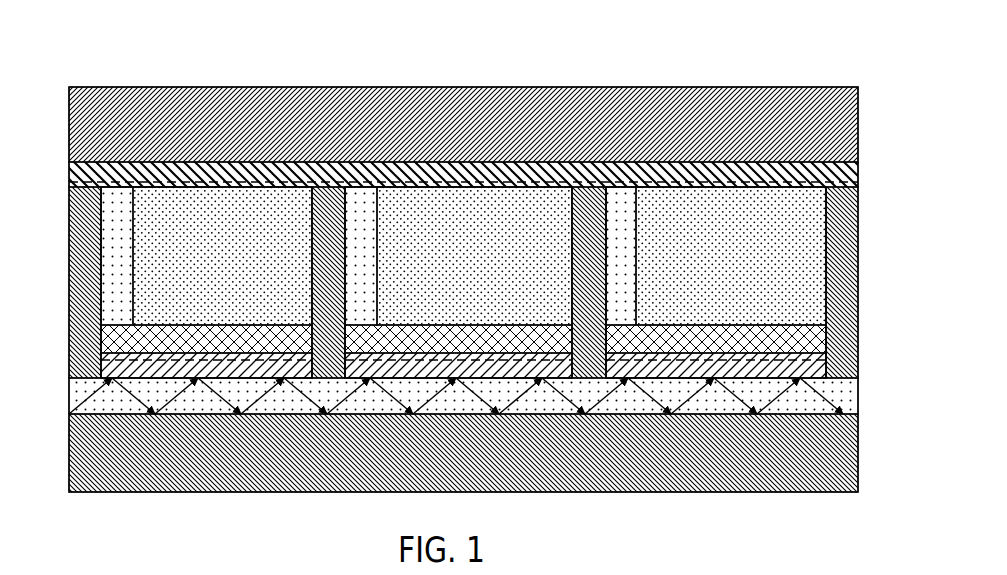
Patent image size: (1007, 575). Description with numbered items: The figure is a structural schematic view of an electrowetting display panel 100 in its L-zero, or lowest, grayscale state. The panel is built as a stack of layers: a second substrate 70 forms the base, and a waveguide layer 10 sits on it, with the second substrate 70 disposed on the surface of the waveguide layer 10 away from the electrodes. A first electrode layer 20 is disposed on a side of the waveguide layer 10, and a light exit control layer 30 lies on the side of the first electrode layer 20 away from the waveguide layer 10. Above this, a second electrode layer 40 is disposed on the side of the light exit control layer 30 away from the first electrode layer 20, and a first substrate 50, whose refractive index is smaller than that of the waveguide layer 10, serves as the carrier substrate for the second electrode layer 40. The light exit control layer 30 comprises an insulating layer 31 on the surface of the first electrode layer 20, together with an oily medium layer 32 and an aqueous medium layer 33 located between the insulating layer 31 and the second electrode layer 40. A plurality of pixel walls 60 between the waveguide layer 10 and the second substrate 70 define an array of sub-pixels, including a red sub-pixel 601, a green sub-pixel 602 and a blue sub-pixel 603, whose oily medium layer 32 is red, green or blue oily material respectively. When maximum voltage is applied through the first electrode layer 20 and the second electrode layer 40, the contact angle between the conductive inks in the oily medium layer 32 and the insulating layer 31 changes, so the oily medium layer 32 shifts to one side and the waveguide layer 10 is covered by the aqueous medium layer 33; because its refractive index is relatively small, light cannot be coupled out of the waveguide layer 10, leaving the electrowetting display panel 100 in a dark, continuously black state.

The electrowetting display panel 100 is at (76, 57).
The waveguide layer 10 is at (843, 406).
The first electrode layer 20 is at (813, 362).
The light exit control layer 30 is at (525, 270).
The insulating layer 31 is at (505, 338).
The oily medium layer 32 is at (627, 311).
The aqueous medium layer 33 is at (813, 273).
The second electrode layer 40 is at (858, 167).
The first substrate 50 is at (858, 124).
The pixel walls 60 is at (858, 213).
The second substrate 70 is at (858, 447).
The red sub-pixel 601 is at (228, 178).
The green sub-pixel 602 is at (471, 178).
The blue sub-pixel 603 is at (725, 178).